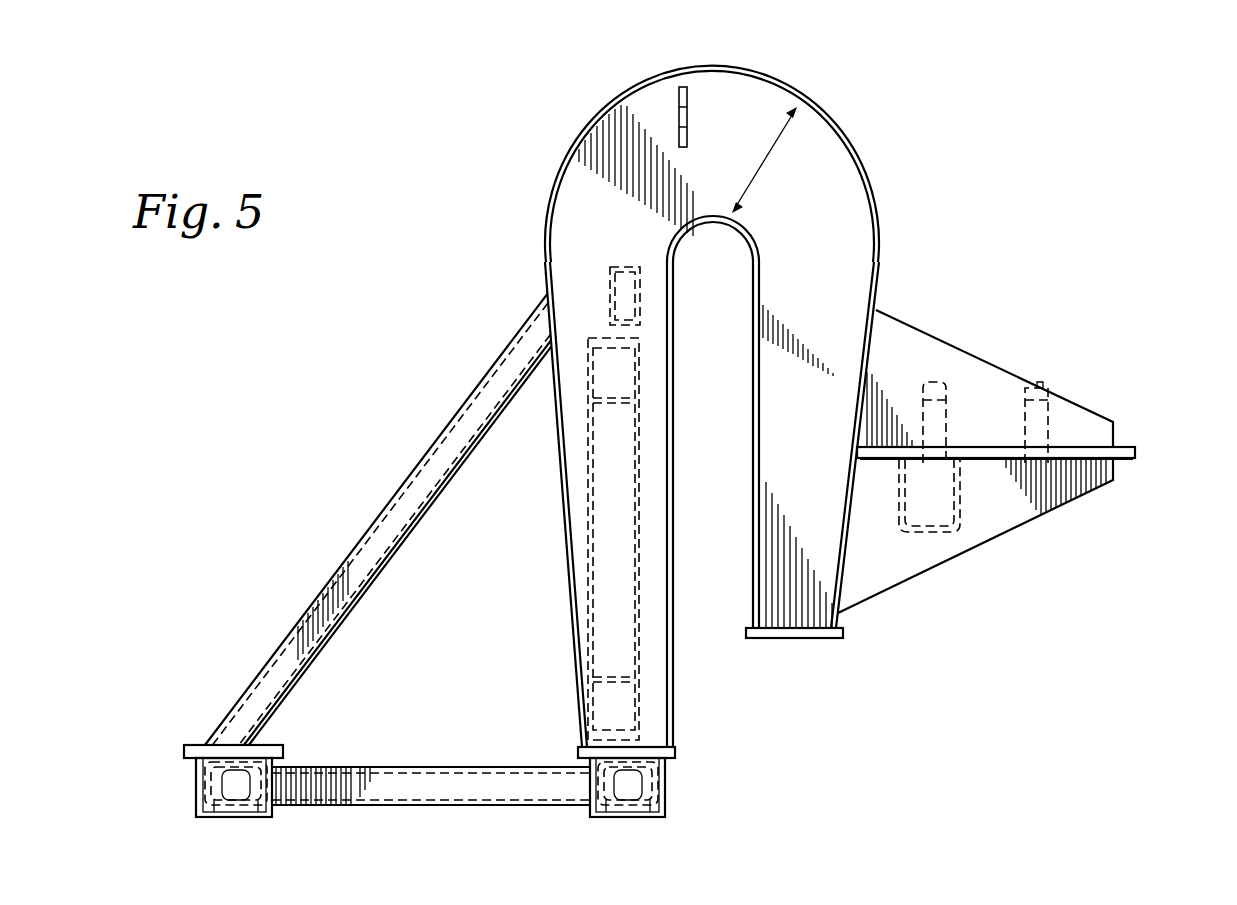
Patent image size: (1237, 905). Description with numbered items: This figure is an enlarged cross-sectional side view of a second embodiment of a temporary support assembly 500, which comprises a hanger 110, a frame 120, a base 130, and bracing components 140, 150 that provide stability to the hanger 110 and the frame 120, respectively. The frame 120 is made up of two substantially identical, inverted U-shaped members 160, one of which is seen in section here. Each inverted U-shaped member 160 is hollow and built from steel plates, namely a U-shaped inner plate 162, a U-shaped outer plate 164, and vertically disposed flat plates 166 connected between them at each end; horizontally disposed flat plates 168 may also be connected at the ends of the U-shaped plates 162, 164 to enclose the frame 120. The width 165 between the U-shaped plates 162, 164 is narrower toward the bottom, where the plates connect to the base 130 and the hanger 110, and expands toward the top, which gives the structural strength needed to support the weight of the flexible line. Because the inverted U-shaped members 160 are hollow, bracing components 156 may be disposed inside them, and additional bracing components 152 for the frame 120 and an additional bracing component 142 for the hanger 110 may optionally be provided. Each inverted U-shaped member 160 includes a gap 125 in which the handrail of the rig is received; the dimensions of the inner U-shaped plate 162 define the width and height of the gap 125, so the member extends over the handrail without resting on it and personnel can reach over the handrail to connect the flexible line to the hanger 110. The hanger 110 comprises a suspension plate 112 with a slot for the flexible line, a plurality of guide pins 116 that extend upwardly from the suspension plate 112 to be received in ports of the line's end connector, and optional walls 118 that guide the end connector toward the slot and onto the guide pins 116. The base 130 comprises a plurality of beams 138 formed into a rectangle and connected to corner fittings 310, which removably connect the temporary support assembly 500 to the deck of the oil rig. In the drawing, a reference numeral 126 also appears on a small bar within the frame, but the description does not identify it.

The temporary support assembly 500 is at (927, 85).
The frame 120 is at (728, 67).
The inverted U-shaped member 160 is at (660, 97).
The U-shaped inner plate 162 is at (674, 709).
The U-shaped outer plate 164 is at (850, 152).
The vertically disposed flat plate 166 is at (853, 222).
The gap 125 is at (735, 426).
The horizontally disposed flat plate 168 is at (798, 639).
The attachment bar 126 is at (688, 100).
The width 165 is at (760, 167).
The bracing component 152 is at (620, 266).
The bracing component 156 is at (607, 530).
The bracing component 150 is at (371, 521).
The base 130 is at (442, 765).
The beam 138 is at (433, 806).
The corner fitting 310 is at (195, 787).
The hanger 110 is at (1138, 443).
The suspension plate 112 is at (1128, 460).
The wall 118 is at (910, 320).
The bracing component 140 is at (1018, 528).
The guide pin 116 is at (933, 382).
The bracing component 142 is at (945, 532).